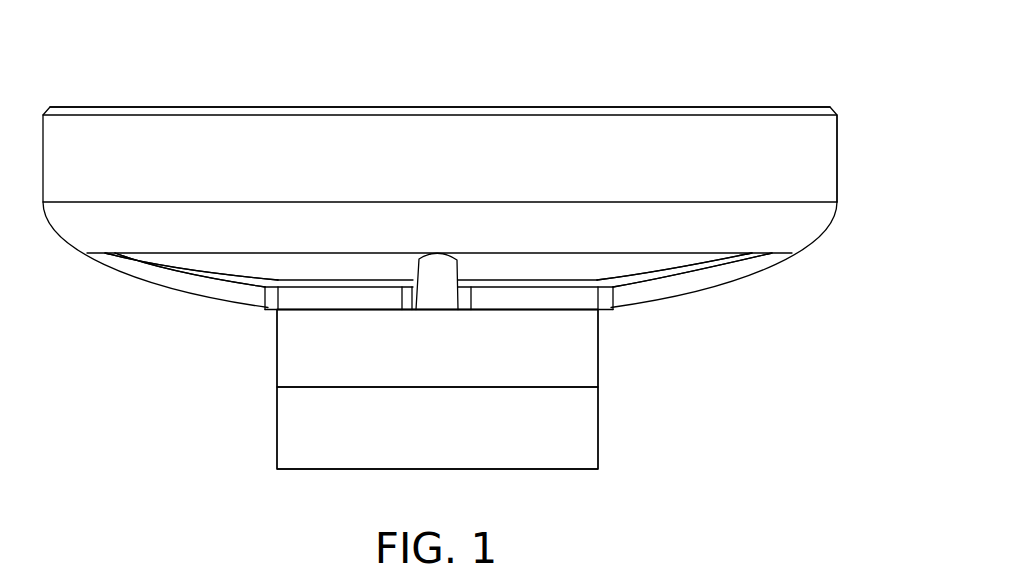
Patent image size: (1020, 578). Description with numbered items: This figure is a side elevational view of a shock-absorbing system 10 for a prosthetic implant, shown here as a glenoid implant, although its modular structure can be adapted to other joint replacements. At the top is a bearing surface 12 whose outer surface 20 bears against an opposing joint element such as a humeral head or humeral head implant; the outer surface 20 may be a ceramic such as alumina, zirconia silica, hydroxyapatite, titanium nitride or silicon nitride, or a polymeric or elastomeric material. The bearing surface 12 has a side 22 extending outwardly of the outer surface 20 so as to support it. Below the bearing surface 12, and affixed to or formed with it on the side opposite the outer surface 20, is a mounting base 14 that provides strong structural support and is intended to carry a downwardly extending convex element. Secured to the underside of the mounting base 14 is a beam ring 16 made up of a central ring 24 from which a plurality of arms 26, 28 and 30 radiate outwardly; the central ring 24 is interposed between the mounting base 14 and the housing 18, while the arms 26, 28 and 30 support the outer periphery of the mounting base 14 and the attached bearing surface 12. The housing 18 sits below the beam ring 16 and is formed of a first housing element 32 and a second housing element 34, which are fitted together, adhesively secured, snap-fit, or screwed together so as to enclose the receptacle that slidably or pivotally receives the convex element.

The shock-absorbing system 10 is at (466, 261).
The bearing surface 12 is at (720, 107).
The mounting base 14 is at (802, 228).
The beam ring 16 is at (680, 287).
The housing 18 is at (430, 390).
The outer surface 20 is at (340, 107).
The side 22 is at (797, 175).
The central ring 24 is at (520, 305).
The arm 26 is at (637, 297).
The arm 28 is at (441, 295).
The arm 30 is at (208, 292).
The first housing element 32 is at (587, 425).
The second housing element 34 is at (592, 360).